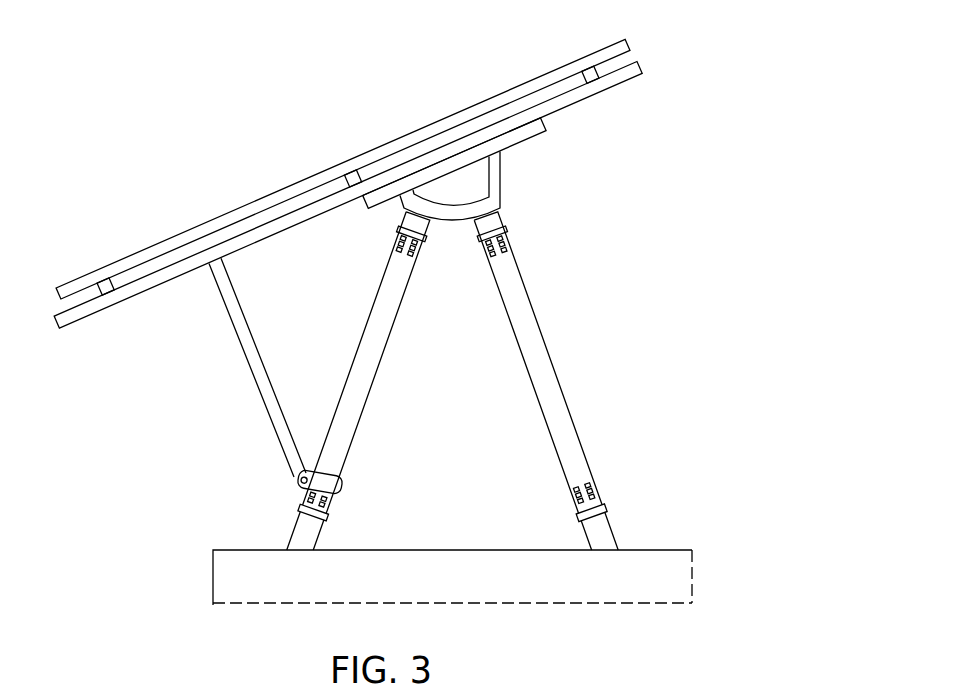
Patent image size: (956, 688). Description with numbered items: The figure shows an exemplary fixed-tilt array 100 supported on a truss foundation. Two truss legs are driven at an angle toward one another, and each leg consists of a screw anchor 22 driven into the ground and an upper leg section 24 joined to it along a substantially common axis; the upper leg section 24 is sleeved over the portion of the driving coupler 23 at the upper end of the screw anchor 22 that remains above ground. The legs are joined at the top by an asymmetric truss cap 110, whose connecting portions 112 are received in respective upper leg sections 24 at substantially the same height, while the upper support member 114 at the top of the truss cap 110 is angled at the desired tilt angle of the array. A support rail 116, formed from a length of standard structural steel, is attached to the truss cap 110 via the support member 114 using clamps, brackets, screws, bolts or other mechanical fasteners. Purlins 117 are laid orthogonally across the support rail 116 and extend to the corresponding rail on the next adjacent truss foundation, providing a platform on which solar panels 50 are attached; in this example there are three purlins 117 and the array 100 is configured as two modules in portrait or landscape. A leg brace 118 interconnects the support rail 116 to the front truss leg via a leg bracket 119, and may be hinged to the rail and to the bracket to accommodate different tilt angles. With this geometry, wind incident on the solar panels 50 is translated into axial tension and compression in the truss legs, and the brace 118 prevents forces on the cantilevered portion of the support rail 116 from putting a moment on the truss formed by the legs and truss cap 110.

The fixed-tilt array 100 is at (684, 247).
The solar panels 50 is at (440, 118).
The support rail 116 is at (648, 66).
The purlins 117 is at (586, 64).
The upper support member 114 is at (550, 121).
The truss cap 110 is at (503, 190).
The connecting portions 112 is at (505, 213).
The upper leg sections 24 is at (374, 381).
The driving coupler 23 is at (610, 512).
The screw anchor 22 is at (322, 541).
The leg brace 118 is at (252, 376).
The leg bracket 119 is at (340, 497).